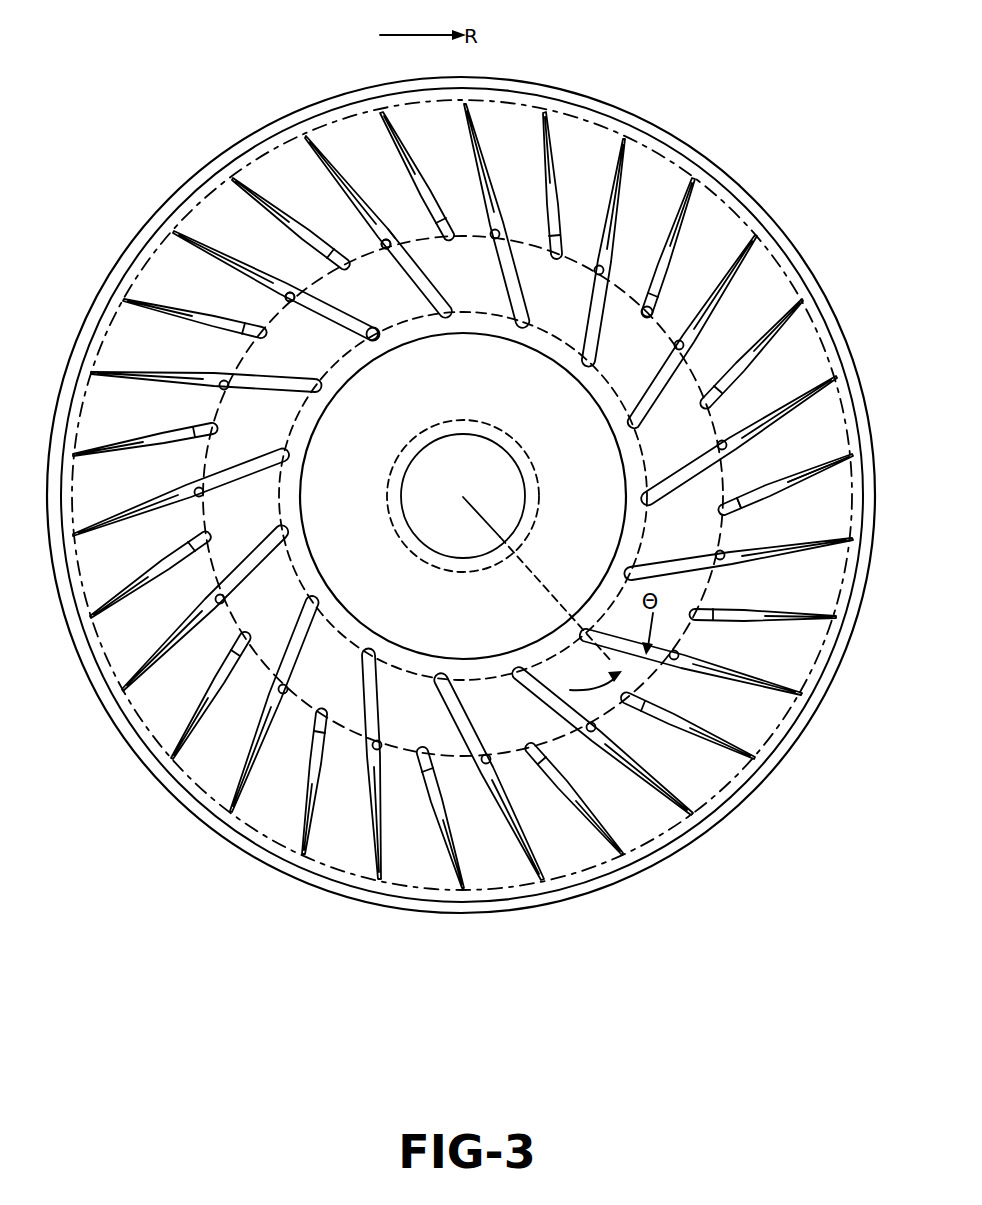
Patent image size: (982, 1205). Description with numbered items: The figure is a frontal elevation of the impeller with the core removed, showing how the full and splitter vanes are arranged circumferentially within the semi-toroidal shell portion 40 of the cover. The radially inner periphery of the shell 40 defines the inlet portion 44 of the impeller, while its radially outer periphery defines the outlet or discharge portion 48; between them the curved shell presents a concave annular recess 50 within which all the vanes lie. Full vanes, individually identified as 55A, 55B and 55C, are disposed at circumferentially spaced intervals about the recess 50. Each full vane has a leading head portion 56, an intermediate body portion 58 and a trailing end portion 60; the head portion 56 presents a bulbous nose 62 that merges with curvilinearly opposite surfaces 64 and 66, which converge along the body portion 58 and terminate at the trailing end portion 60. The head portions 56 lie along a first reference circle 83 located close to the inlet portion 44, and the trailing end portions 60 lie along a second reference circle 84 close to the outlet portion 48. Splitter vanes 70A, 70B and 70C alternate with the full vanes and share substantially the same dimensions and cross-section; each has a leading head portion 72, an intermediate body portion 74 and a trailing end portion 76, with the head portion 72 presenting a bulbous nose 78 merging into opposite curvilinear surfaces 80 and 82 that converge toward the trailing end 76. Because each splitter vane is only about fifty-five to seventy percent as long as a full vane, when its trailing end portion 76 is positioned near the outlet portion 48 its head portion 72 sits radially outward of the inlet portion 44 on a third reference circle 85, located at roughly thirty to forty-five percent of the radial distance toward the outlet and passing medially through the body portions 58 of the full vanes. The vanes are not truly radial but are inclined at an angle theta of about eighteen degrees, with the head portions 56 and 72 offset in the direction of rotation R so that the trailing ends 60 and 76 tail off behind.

The semi-toroidal shell portion 40 is at (133, 330).
The inlet portion 44 is at (583, 408).
The outlet portion 48 is at (805, 357).
The concave annular recess 50 is at (583, 150).
The full vane 55A is at (268, 500).
The full vane 55B is at (278, 397).
The full vane 55C is at (332, 327).
The leading head portion 56 is at (364, 325).
The intermediate body portion 58 is at (393, 240).
The trailing end portion 60 is at (621, 155).
The bulbous nose 62 is at (322, 297).
The curvilinear surface 64 is at (367, 222).
The curvilinear surface 66 is at (389, 234).
The splitter vane 70A is at (199, 416).
The splitter vane 70B is at (238, 306).
The splitter vane 70C is at (298, 242).
The leading head portion 72 is at (647, 290).
The intermediate body portion 74 is at (740, 498).
The trailing end portion 76 is at (835, 620).
The bulbous nose 78 is at (653, 317).
The curvilinear surface 80 is at (797, 520).
The curvilinear surface 82 is at (818, 496).
The first reference circle 83 is at (337, 627).
The second reference circle 84 is at (766, 251).
The third reference circle 85 is at (547, 740).